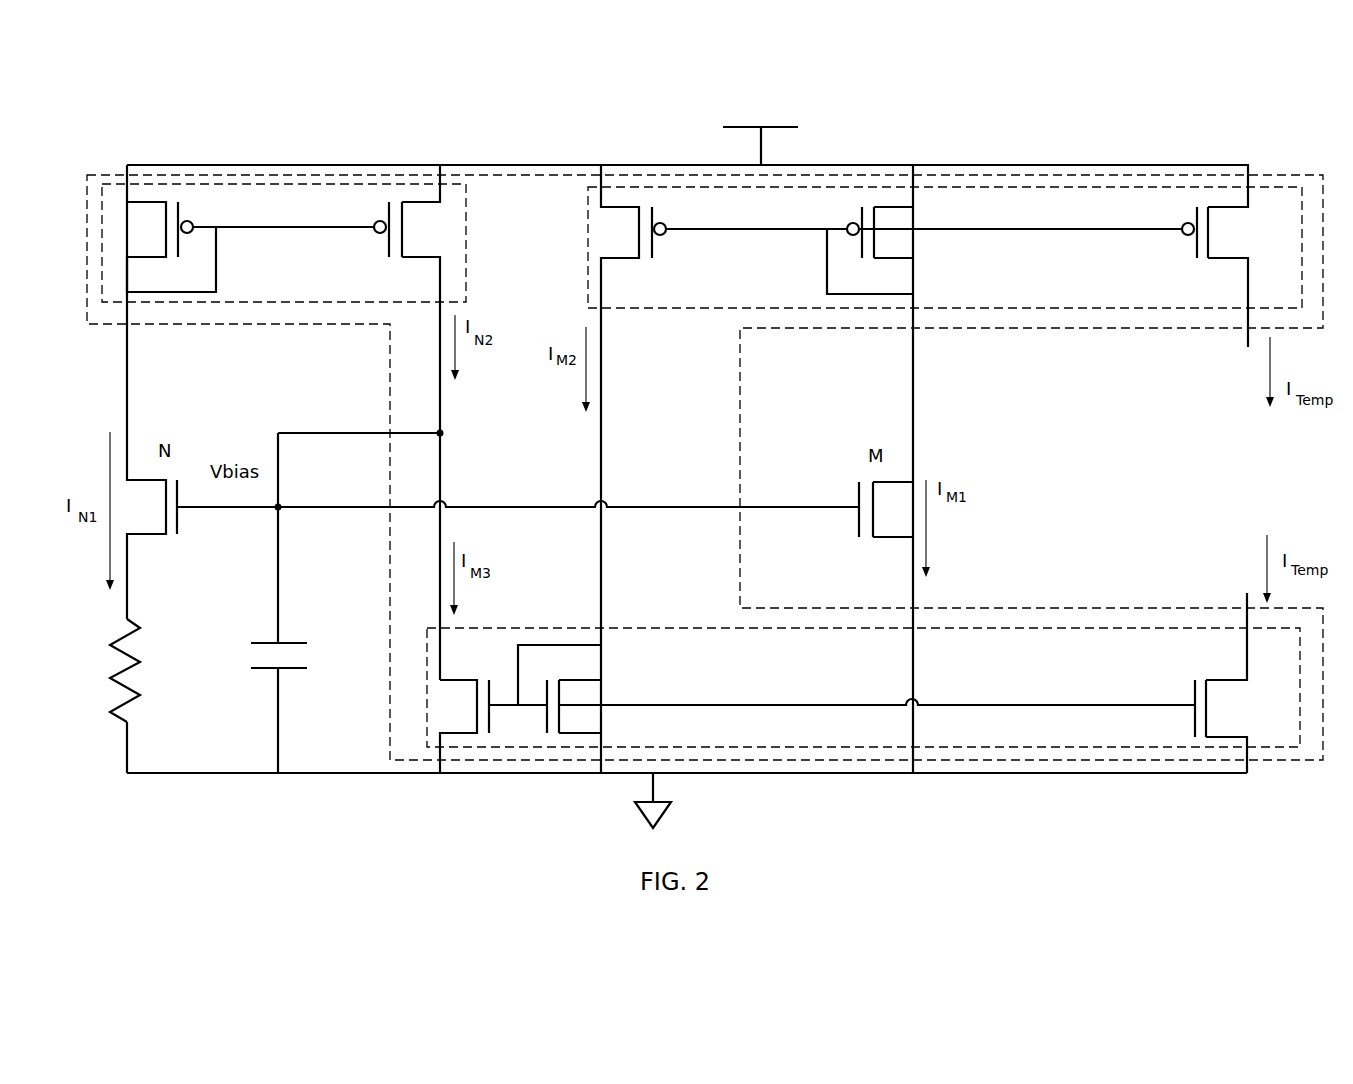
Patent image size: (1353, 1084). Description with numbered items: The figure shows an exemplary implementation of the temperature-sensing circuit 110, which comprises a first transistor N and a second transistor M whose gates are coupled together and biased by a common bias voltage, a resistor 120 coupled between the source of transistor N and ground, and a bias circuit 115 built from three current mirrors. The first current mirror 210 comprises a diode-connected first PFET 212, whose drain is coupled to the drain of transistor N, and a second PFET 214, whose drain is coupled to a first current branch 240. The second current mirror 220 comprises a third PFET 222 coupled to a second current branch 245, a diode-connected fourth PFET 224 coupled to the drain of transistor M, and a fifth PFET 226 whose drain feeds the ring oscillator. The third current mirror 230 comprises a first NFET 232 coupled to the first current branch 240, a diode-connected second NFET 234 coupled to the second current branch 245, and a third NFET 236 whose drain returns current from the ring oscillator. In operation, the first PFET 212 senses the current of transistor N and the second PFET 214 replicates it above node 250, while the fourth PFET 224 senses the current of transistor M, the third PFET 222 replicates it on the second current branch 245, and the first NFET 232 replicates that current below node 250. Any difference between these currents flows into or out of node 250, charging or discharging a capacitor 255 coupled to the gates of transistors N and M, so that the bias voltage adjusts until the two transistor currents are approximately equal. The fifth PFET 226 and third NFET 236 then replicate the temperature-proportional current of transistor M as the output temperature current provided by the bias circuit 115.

The temperature-sensing circuit 110 is at (1288, 126).
The bias circuit 115 is at (960, 332).
The resistor 120 is at (106, 626).
The first current mirror 210 is at (466, 227).
The first PFET 212 is at (200, 215).
The second PFET 214 is at (398, 268).
The second current mirror 220 is at (588, 228).
The third PFET 222 is at (669, 246).
The fourth PFET 224 is at (918, 240).
The fifth PFET 226 is at (1255, 242).
The third current mirror 230 is at (487, 628).
The first NFET 232 is at (453, 671).
The second NFET 234 is at (616, 693).
The third NFET 236 is at (1251, 715).
The first current branch 240 is at (447, 473).
The second current branch 245 is at (592, 473).
The node 250 is at (447, 432).
The capacitor 255 is at (257, 622).